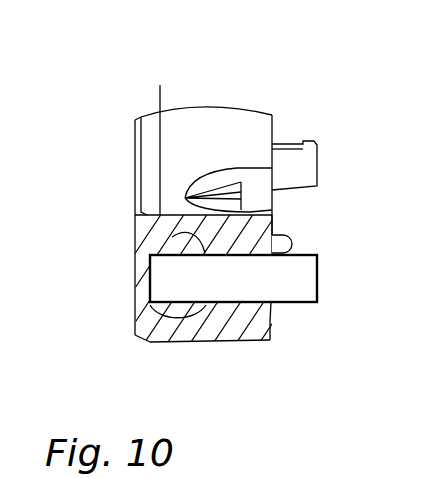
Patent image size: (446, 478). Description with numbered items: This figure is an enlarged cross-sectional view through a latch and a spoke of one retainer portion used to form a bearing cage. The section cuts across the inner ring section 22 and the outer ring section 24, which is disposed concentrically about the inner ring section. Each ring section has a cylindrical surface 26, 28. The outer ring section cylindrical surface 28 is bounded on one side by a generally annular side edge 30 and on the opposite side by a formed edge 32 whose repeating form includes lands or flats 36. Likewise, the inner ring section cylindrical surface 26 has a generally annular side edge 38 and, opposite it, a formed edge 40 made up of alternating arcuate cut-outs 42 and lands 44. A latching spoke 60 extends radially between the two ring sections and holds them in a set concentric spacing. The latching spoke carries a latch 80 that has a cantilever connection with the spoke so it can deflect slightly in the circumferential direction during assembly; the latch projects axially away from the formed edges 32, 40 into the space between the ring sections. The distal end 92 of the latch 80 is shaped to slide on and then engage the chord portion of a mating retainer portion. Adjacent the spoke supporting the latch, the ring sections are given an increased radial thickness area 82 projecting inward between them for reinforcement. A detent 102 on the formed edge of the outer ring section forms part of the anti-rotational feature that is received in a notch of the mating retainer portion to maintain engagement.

The inner ring section 22 is at (160, 85).
The outer ring section 24 is at (208, 343).
The cylindrical surface 26 is at (204, 141).
The cylindrical surface 28 is at (190, 343).
The annular side edge 30 is at (134, 317).
The formed edge 32 is at (272, 328).
The lands 36 is at (272, 315).
The annular side edge 38 is at (140, 180).
The formed edge 40 is at (272, 220).
The arcuate cut-outs 42 is at (252, 163).
The lands 44 is at (272, 228).
The latching spoke 60 is at (137, 283).
The latch 80 is at (252, 292).
The increased radial thickness area 82 is at (200, 240).
The distal end 92 is at (318, 150).
The detent 102 is at (291, 243).